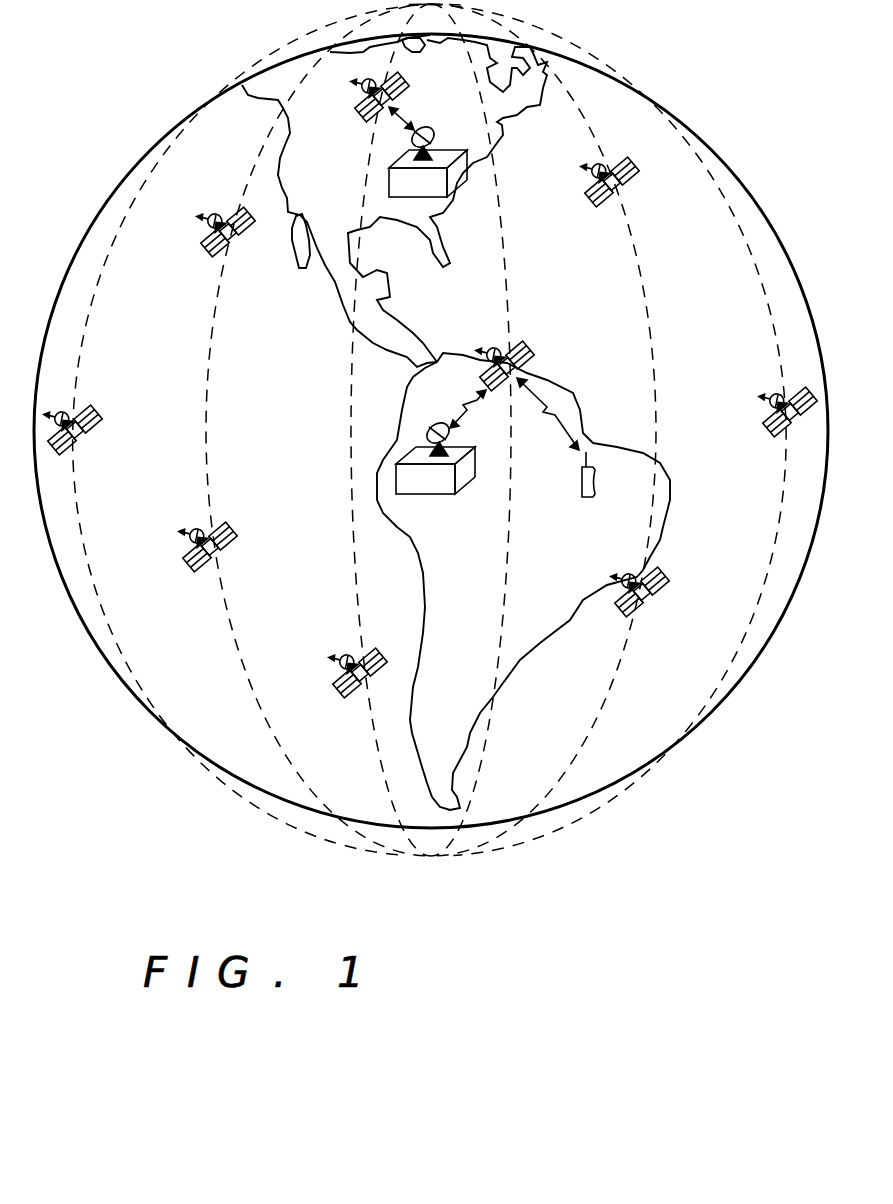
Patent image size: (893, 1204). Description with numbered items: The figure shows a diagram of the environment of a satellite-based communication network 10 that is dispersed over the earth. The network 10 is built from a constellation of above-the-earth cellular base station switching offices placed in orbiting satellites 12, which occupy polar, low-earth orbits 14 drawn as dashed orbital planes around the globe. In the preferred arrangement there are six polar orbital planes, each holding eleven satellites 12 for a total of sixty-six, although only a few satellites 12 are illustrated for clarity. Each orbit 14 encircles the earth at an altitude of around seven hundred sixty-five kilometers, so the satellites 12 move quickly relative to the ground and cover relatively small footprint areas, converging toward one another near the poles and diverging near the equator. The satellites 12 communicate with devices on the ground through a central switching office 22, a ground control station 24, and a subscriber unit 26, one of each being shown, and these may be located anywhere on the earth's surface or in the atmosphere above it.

The satellite-based communication network 10 is at (428, 857).
The satellites 12 is at (360, 122).
The polar low-earth orbits 14 is at (254, 156).
The central switching office 22 is at (432, 496).
The ground control station 24 is at (450, 148).
The subscriber unit 26 is at (587, 497).